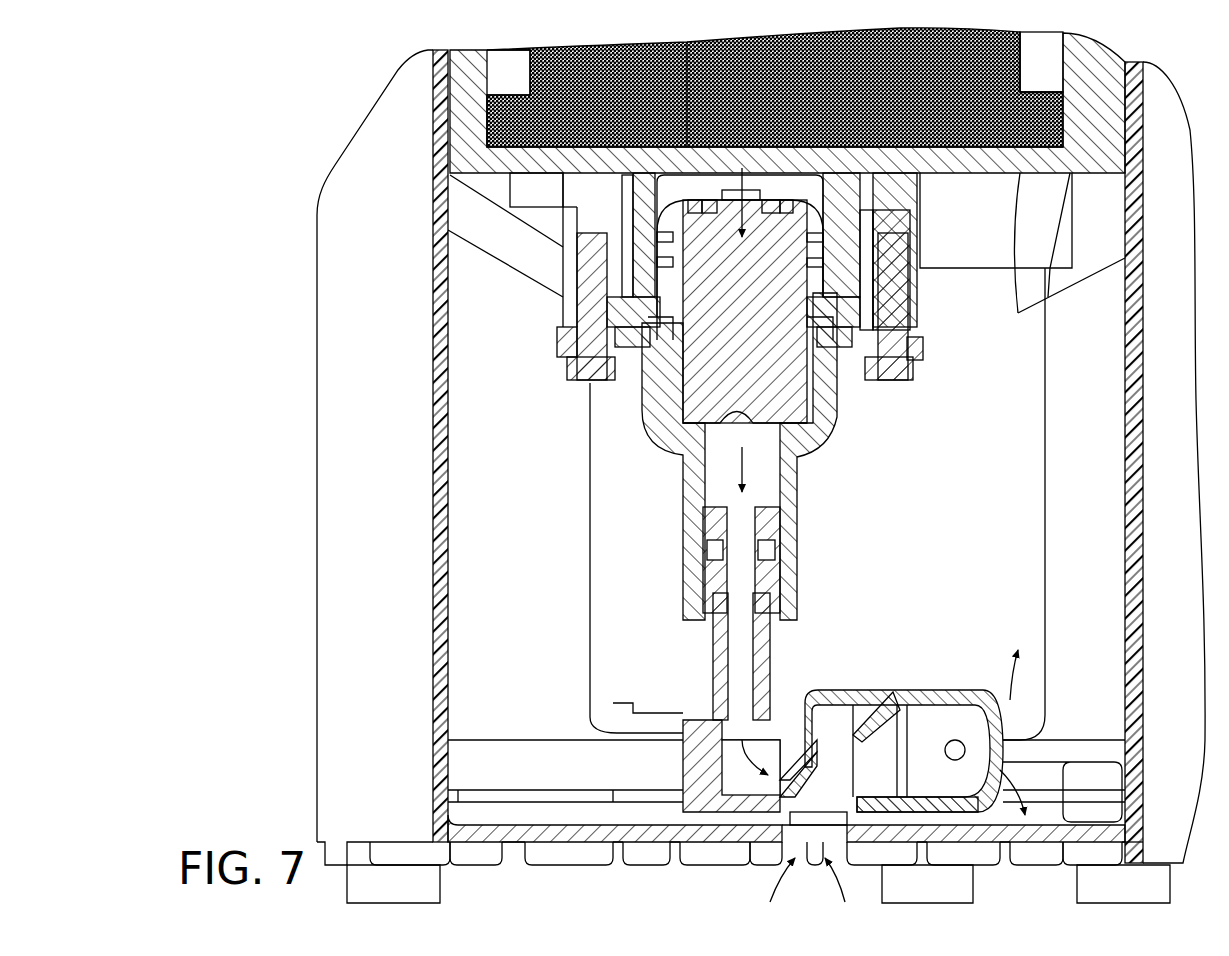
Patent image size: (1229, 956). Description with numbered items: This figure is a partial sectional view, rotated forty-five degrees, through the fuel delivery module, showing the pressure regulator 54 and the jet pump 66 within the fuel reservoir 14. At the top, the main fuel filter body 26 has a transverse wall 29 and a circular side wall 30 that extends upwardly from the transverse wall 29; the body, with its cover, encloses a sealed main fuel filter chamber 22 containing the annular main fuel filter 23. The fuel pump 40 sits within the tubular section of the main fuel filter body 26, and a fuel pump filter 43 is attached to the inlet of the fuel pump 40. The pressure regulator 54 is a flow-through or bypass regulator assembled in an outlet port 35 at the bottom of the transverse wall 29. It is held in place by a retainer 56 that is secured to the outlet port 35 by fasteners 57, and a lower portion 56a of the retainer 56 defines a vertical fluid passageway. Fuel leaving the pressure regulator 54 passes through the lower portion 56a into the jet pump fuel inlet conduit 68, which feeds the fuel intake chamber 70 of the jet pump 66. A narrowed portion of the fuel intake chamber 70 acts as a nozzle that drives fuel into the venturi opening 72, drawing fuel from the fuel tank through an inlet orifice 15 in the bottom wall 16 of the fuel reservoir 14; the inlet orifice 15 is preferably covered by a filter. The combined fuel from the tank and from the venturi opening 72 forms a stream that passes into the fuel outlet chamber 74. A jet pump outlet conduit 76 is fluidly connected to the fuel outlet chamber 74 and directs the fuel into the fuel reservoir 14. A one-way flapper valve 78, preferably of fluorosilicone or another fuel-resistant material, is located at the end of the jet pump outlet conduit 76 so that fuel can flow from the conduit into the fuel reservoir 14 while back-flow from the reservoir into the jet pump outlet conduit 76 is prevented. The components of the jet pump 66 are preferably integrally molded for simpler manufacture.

The fuel reservoir 14 is at (1095, 641).
The inlet orifice 15 is at (808, 842).
The bottom wall 16 is at (472, 842).
The main fuel filter chamber 22 is at (1035, 42).
The main fuel filter 23 is at (890, 42).
The main fuel filter body 26 is at (538, 195).
The transverse wall 29 is at (1025, 180).
The side wall 30 is at (470, 53).
The outlet port 35 is at (913, 258).
The fuel pump 40 is at (607, 547).
The fuel pump filter 43 is at (545, 765).
The pressure regulator 54 is at (792, 265).
The retainer 56 is at (810, 455).
The lower portion of the retainer 56a is at (793, 538).
The fasteners 57 is at (577, 392).
The jet pump 66 is at (833, 662).
The jet pump fuel inlet conduit 68 is at (740, 641).
The fuel intake chamber 70 is at (738, 795).
The venturi opening 72 is at (827, 797).
The fuel outlet chamber 74 is at (875, 705).
The jet pump outlet conduit 76 is at (940, 790).
The one-way flapper valve 78 is at (1012, 760).